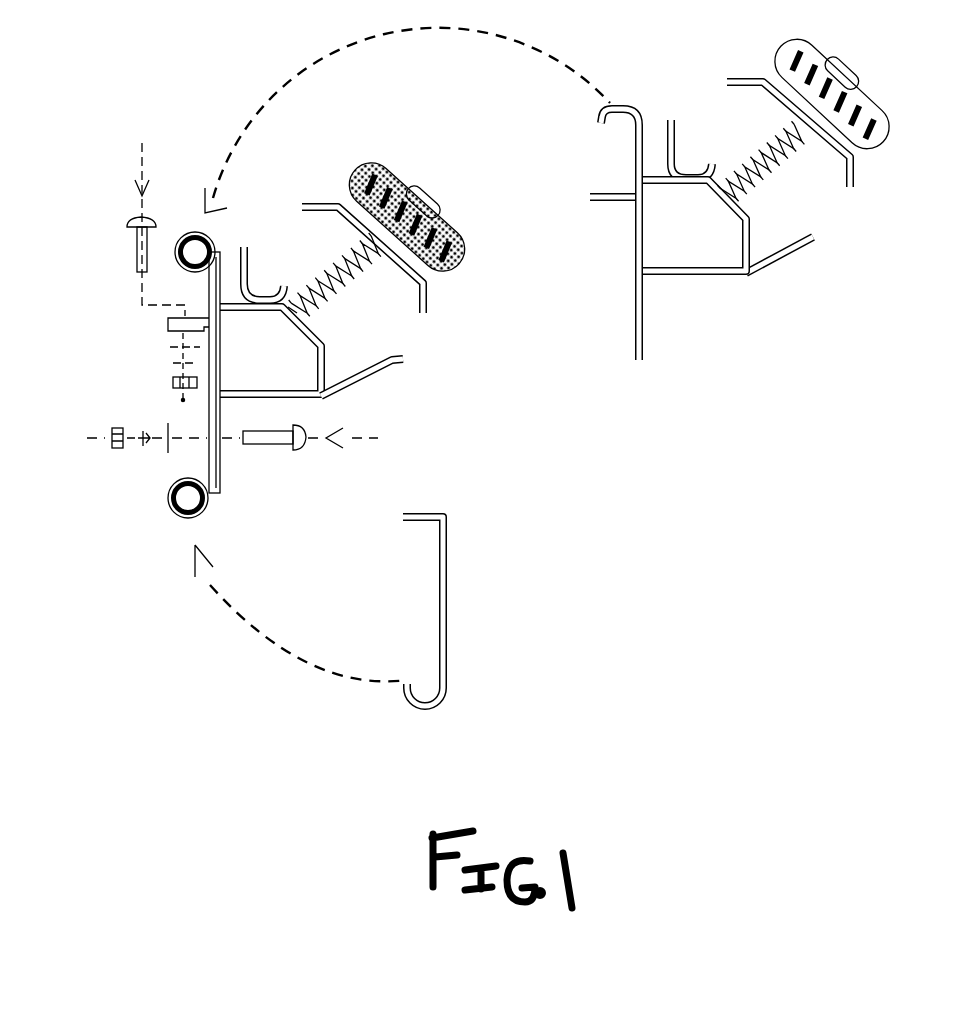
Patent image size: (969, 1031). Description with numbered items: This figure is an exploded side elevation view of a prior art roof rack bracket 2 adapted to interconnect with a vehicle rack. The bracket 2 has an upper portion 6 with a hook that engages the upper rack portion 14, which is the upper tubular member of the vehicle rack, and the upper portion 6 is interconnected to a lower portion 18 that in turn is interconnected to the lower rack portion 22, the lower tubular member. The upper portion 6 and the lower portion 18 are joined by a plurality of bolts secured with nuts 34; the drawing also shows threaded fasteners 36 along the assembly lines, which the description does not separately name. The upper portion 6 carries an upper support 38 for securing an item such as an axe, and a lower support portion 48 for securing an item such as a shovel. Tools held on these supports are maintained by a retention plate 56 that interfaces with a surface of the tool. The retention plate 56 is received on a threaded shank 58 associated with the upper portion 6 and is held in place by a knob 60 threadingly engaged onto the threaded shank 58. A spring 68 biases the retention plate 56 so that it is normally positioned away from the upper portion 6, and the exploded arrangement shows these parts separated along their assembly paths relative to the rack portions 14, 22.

The bracket 2 is at (445, 344).
The upper portion 6 is at (692, 292).
The upper rack portion 14 is at (196, 232).
The lower portion 18 is at (452, 629).
The lower rack portion 22 is at (183, 519).
The nuts 34 is at (173, 383).
The screw 36 is at (137, 253).
The upper support 38 is at (248, 247).
The lower support portion 48 is at (405, 360).
The retention plate 56 is at (428, 297).
The threaded shank 58 is at (333, 300).
The knob 60 is at (385, 173).
The spring 68 is at (343, 267).